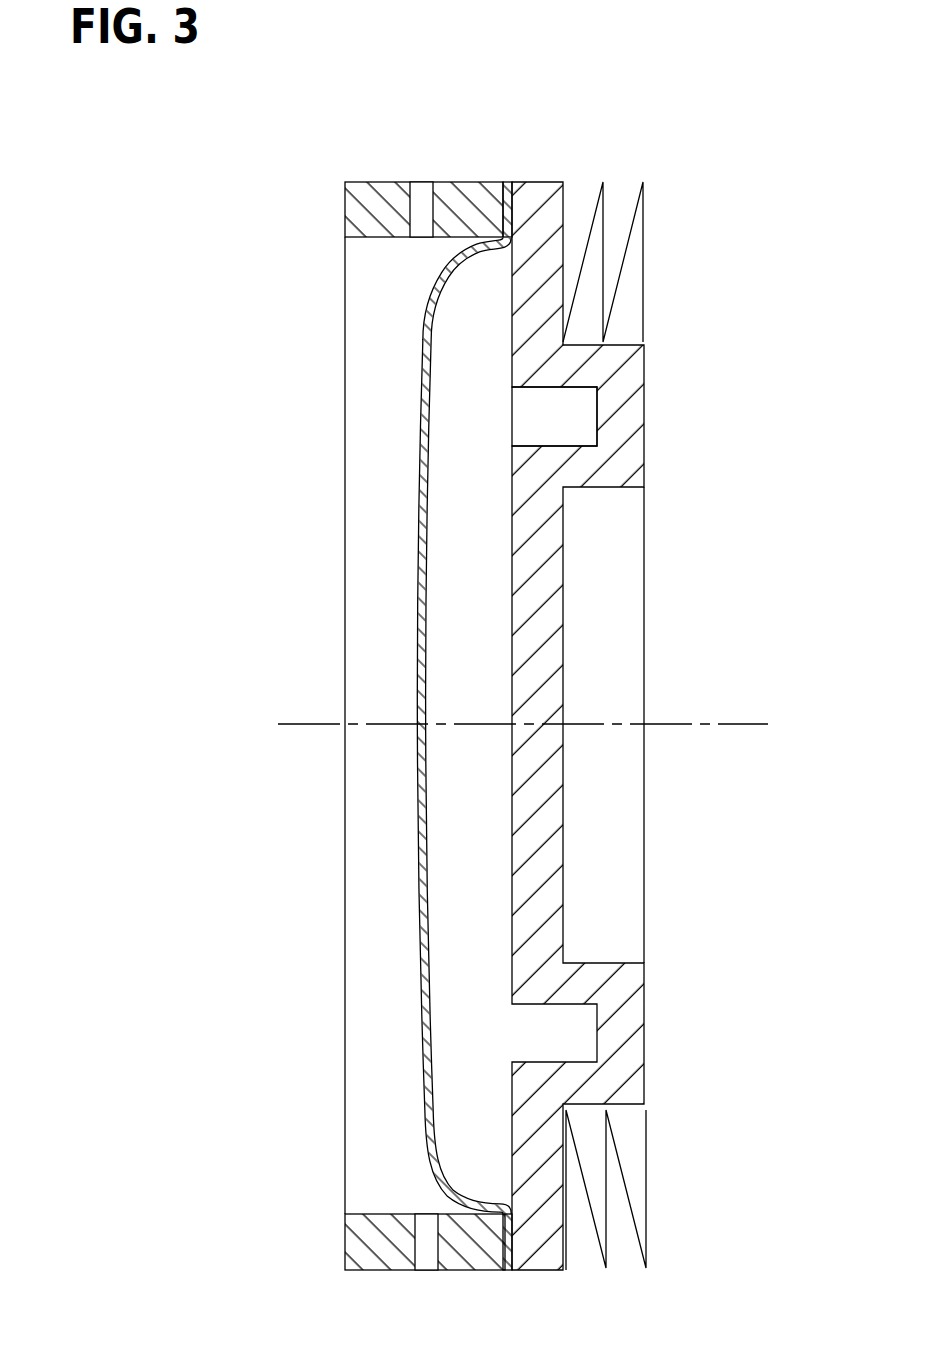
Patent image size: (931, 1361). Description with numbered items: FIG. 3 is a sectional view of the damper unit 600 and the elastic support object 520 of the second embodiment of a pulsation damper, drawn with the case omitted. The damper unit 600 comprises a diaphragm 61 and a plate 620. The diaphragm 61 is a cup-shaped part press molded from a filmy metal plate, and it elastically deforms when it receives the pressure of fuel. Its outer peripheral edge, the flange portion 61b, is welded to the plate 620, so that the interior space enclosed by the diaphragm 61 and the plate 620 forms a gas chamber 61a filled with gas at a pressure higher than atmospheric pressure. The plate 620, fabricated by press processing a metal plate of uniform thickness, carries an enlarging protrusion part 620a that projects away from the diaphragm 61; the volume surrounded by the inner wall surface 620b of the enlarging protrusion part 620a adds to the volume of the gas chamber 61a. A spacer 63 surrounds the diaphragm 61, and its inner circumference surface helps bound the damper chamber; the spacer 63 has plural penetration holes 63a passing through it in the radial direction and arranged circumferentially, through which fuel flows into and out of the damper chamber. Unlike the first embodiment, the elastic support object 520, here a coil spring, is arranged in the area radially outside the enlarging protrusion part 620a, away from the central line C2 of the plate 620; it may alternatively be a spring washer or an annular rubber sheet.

The damper unit 600 is at (258, 312).
The spacer 63 is at (373, 238).
The penetration hole 63a is at (421, 182).
The plate 620 is at (542, 503).
The enlarging protrusion part 620a is at (644, 458).
The inner wall surface 620b is at (562, 445).
The diaphragm 61 is at (419, 527).
The gas chamber 61a is at (452, 800).
The flange portion 61b is at (505, 1241).
The elastic support object 520 is at (646, 1190).
The central line C2 is at (543, 724).